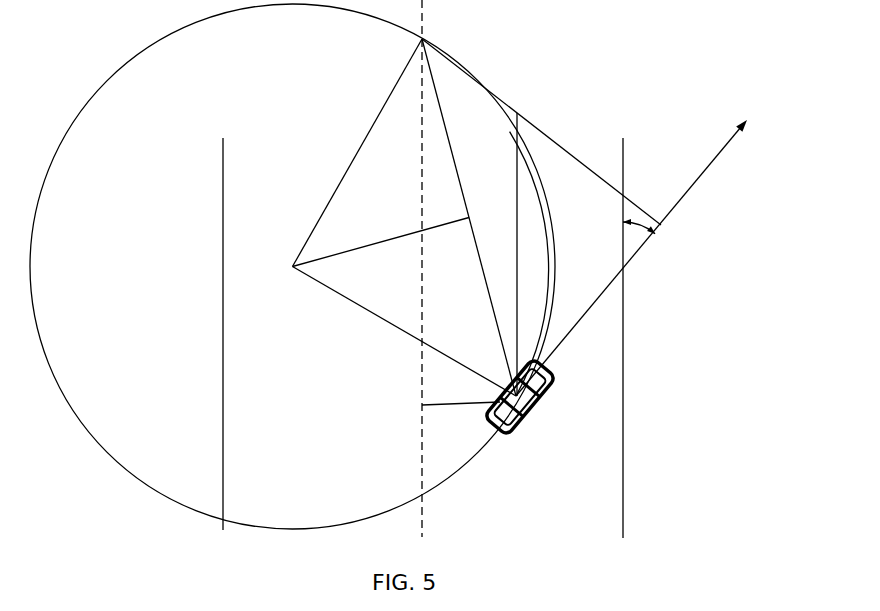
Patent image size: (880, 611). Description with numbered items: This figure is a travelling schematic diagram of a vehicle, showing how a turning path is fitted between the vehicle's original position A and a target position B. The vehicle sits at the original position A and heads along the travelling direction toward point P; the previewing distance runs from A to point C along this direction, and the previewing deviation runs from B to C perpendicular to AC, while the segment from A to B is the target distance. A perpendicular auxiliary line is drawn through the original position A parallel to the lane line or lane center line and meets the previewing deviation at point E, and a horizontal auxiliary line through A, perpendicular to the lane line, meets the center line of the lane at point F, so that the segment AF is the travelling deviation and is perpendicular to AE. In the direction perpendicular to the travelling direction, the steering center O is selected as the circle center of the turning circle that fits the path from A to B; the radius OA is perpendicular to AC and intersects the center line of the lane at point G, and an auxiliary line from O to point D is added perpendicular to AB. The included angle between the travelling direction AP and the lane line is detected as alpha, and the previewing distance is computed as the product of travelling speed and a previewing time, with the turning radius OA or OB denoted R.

The steering center O is at (346, 158).
The target position B is at (457, 201).
The previewing point C is at (552, 142).
The foot of auxiliary line OD D is at (390, 237).
The intersection point of perpendicular line AE E is at (525, 247).
The arc H of turning circle H is at (541, 264).
The intersection point of radius OA with lane center line G is at (405, 332).
The intersection point of horizontal line AF F is at (450, 409).
The travelling direction endpoint P is at (640, 254).
The original position A is at (520, 397).